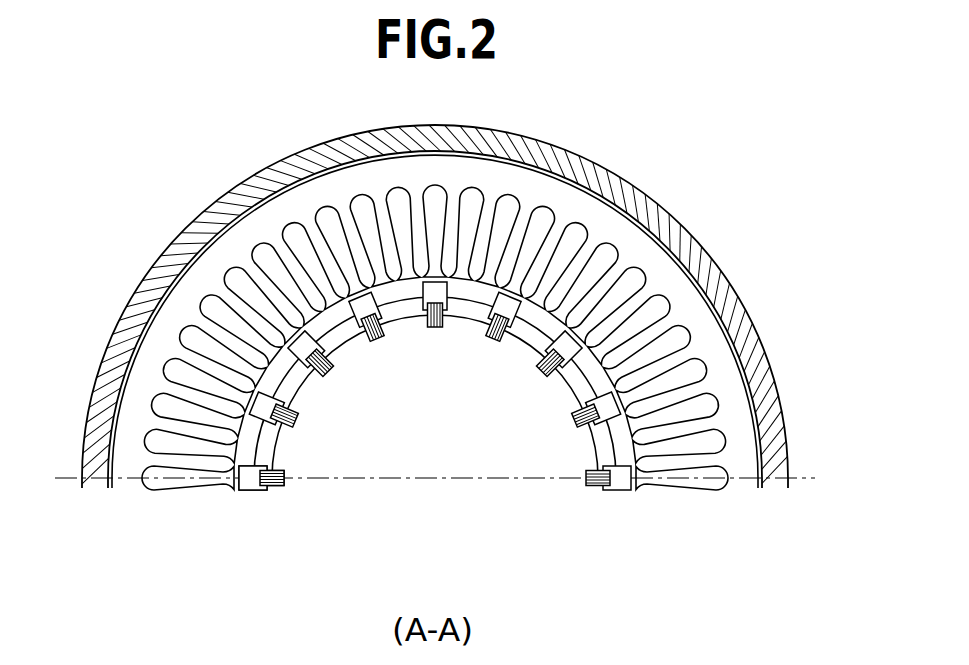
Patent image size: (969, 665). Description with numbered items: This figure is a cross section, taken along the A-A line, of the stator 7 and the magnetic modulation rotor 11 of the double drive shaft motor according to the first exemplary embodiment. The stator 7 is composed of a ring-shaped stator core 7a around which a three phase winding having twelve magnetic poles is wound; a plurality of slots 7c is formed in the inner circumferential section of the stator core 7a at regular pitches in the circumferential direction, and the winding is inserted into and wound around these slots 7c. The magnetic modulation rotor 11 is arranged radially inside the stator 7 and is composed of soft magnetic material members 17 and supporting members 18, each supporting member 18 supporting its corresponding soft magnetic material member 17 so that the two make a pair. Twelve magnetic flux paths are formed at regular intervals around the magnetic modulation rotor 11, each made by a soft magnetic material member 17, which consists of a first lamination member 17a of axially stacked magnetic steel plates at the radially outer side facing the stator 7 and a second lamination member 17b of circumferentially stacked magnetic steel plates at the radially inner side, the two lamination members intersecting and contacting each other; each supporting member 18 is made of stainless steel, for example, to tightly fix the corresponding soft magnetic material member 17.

The stator 7 is at (590, 138).
The stator core 7a is at (295, 203).
The slots 7c is at (267, 258).
The magnetic modulation rotor 11 is at (602, 374).
The soft magnetic material member 17 is at (418, 444).
The first lamination member 17a is at (249, 491).
The second lamination member 17b is at (286, 515).
The supporting member 18 is at (298, 389).